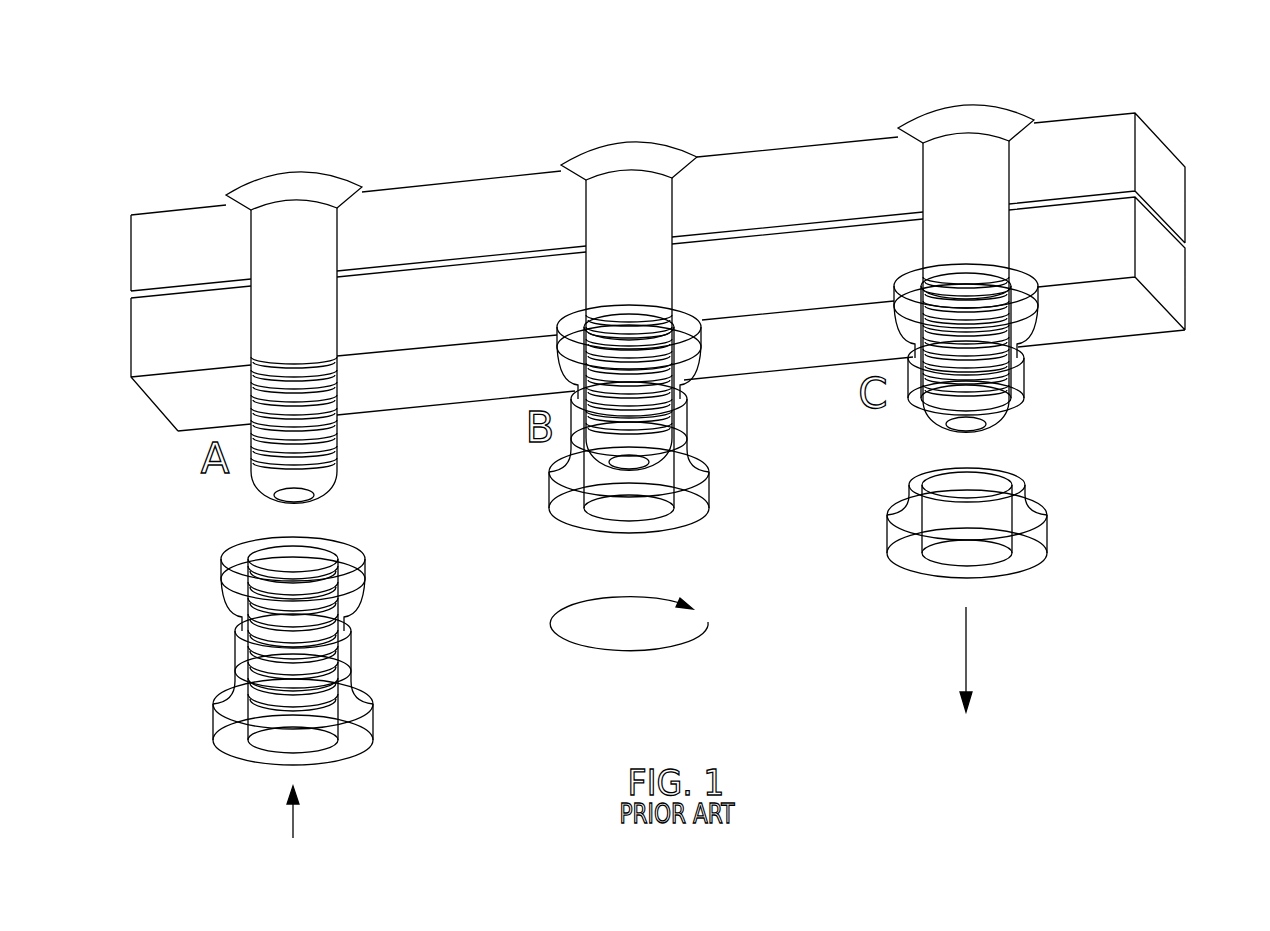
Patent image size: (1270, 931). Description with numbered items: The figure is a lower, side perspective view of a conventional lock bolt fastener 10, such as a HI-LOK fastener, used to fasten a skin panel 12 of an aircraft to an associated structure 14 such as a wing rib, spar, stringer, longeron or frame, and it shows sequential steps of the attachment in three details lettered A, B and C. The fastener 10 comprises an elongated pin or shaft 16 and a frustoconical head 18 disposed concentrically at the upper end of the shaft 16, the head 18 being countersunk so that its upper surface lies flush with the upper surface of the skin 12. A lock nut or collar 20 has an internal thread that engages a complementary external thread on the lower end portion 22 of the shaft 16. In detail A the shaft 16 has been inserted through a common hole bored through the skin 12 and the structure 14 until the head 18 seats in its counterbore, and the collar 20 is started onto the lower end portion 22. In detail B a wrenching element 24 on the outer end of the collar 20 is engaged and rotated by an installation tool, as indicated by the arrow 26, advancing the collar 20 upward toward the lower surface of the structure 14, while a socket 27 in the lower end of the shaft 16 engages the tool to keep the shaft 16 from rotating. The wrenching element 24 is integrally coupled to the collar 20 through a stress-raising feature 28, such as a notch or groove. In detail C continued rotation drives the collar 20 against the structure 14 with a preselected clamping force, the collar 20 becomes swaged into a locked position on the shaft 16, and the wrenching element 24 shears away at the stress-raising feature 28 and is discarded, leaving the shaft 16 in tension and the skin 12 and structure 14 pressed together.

The lock bolt fastener 10 is at (641, 274).
The skin panel 12 is at (1165, 197).
The associated structure 14 is at (1165, 278).
The shaft 16 is at (323, 236).
The head 18 is at (325, 190).
The collar 20 is at (237, 555).
The lower end portion 22 is at (323, 428).
The wrenching element 24 is at (362, 718).
The arrow 26 is at (568, 606).
The socket 27 is at (312, 499).
The stress-raising feature 28 is at (342, 680).